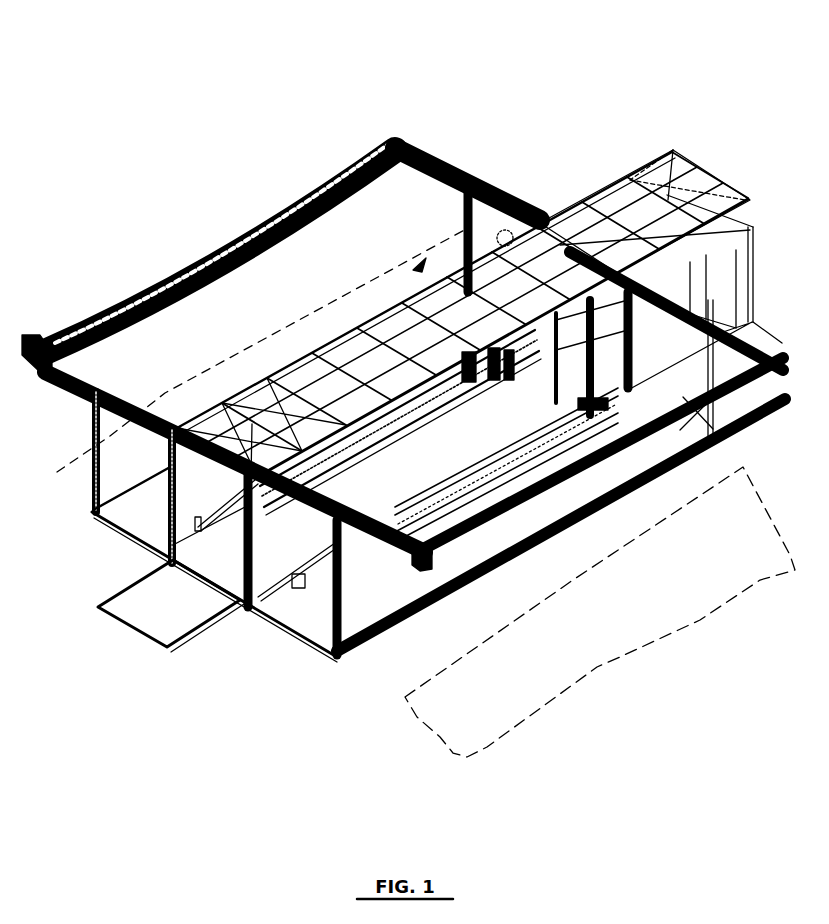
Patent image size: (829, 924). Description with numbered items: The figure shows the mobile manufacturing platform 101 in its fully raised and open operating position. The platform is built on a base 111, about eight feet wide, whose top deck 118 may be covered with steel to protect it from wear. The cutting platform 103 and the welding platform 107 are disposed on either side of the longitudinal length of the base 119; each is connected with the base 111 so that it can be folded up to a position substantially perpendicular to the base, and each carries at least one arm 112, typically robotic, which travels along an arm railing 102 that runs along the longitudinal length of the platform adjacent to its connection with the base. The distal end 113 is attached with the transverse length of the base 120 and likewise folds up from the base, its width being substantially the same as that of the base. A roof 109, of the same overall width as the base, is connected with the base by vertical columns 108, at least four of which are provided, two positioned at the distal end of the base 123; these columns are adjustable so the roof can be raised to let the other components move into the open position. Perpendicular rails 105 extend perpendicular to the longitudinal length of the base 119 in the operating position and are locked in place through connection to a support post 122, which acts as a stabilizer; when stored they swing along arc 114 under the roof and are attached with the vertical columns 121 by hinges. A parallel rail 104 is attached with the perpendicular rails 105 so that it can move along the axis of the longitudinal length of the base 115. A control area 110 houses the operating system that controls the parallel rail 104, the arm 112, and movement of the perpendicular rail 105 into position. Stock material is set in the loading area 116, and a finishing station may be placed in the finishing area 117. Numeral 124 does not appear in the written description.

The mobile manufacturing platform 101 is at (498, 113).
The arm railing 102 is at (468, 475).
The cutting platform 103 is at (527, 528).
The parallel rail 104 is at (235, 270).
The perpendicular rail 105 is at (118, 388).
The welding platform 107 is at (146, 490).
The vertical column 108 is at (256, 541).
The roof 109 is at (707, 185).
The control area 110 is at (753, 267).
The base 111 is at (277, 571).
The arm 112 is at (580, 388).
The distal end 113 is at (171, 606).
The arc 114 is at (423, 182).
The axis of the longitudinal length of the base 115 is at (287, 254).
The loading area 116 is at (600, 612).
The finishing area 117 is at (462, 315).
The top deck 118 is at (369, 487).
The longitudinal length of the base 119 is at (304, 162).
The transverse length of the base 120 is at (40, 614).
The vertical column 121 is at (178, 505).
The support post 122 is at (346, 602).
The distal end of the base 123 is at (226, 529).
The actuator rod 124 is at (568, 357).